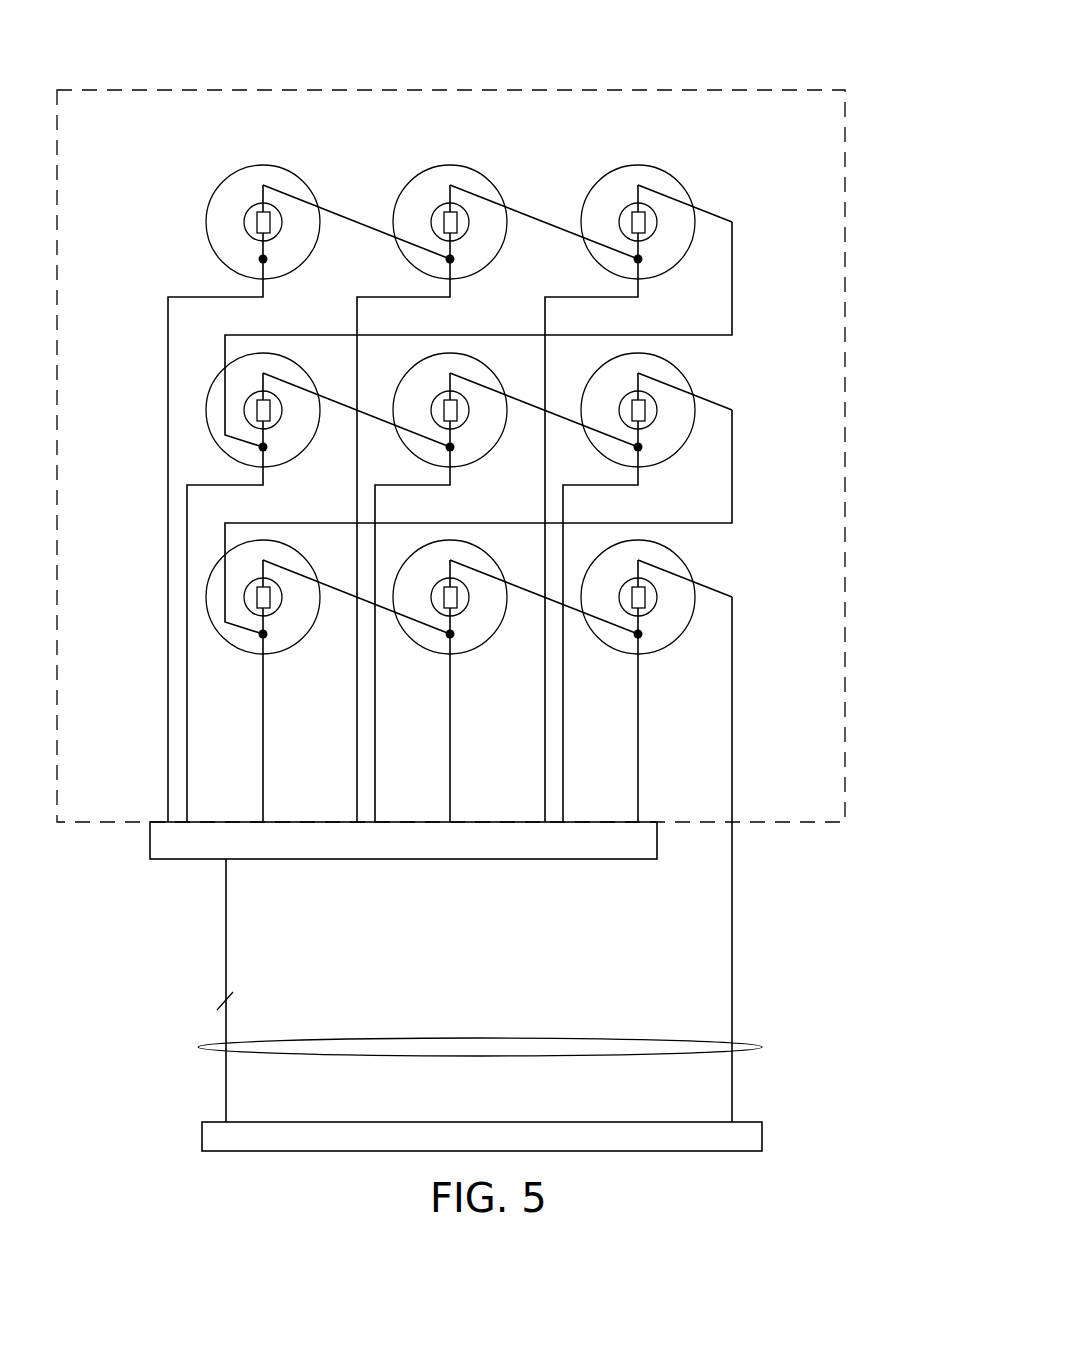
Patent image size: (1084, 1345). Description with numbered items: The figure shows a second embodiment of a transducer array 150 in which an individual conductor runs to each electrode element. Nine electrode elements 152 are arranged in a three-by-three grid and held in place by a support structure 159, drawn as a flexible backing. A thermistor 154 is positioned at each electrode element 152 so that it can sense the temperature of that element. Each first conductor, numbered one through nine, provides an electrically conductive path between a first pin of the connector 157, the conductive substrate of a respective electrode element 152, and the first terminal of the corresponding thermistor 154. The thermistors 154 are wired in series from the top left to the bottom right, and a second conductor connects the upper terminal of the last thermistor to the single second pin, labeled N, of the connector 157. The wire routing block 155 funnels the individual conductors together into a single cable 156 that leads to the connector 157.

The transducer array 150 is at (592, 58).
The electrode element 152 is at (242, 168).
The thermistor 154 is at (245, 222).
The wire routing block 155 is at (543, 862).
The cable 156 is at (197, 1046).
The connector 157 is at (202, 1135).
The support structure 159 is at (846, 410).